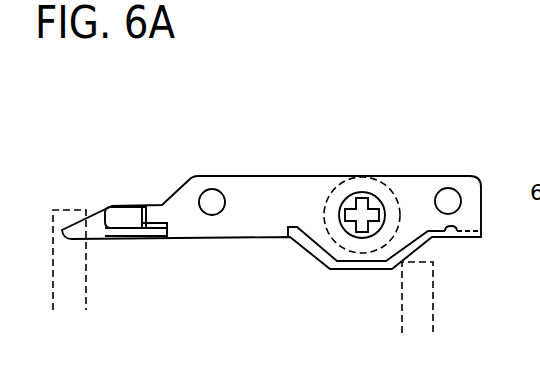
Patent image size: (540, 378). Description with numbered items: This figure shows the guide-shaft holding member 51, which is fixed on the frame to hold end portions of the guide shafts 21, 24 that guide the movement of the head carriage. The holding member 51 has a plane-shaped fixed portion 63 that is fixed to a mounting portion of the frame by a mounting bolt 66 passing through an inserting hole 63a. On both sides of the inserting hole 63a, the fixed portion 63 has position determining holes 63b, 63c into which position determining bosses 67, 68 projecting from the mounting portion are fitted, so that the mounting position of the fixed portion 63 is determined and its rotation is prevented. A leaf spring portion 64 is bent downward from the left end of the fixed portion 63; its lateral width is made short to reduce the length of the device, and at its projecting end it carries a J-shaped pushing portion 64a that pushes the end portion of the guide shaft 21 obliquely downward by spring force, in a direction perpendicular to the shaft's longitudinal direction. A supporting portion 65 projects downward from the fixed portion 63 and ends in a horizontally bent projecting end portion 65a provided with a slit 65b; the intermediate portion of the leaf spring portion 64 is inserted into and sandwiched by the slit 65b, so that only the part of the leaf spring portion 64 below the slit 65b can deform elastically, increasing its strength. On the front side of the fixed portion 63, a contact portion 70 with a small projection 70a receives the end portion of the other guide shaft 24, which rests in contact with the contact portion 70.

The guide shaft 21 is at (73, 280).
The guide shaft 24 is at (423, 308).
The guide-shaft holding member 51 is at (312, 176).
The fixed portion 63 is at (271, 190).
The inserting hole 63a is at (341, 196).
The position determining hole 63b is at (212, 188).
The position determining hole 63c is at (453, 189).
The leaf spring portion 64 is at (155, 203).
The pushing portion 64a is at (93, 235).
The supporting portion 65 is at (160, 237).
The projecting end portion 65a is at (118, 222).
The slit 65b is at (142, 205).
The mounting bolt 66 is at (377, 203).
The position determining boss 67 is at (208, 200).
The position determining boss 68 is at (452, 201).
The contact portion 70 is at (365, 272).
The tab projection 70a is at (425, 254).